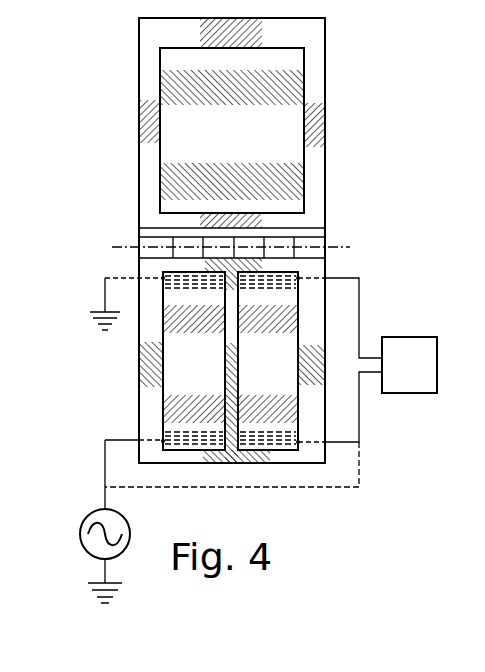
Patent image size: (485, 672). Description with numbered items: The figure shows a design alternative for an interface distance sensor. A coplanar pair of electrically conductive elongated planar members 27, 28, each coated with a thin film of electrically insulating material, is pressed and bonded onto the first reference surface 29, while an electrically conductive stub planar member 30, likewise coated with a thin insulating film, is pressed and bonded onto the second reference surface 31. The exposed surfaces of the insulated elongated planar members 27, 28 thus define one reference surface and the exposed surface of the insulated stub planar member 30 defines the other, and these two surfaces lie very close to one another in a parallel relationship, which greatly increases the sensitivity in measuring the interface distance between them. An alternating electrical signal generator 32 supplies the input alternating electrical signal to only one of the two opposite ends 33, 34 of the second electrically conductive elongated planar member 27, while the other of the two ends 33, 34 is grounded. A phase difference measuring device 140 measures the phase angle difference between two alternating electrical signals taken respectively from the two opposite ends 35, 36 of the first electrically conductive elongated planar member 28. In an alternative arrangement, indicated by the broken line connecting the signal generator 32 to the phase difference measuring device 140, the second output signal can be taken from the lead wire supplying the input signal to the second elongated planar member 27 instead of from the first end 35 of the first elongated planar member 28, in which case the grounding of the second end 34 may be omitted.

The second electrically conductive elongated planar member 27 is at (187, 357).
The first electrically conductive elongated planar member 28 is at (278, 345).
The first reference surface 29 is at (150, 398).
The electrically conductive stub planar member 30 is at (202, 140).
The second reference surface 31 is at (312, 150).
The alternating electrical signal generator 32 is at (92, 513).
The first end of the second elongated planar member 33 is at (163, 442).
The second end of the second elongated planar member 34 is at (163, 278).
The first end of the first elongated planar member 35 is at (302, 443).
The second end of the first elongated planar member 36 is at (303, 277).
The phase difference measuring device 140 is at (408, 395).